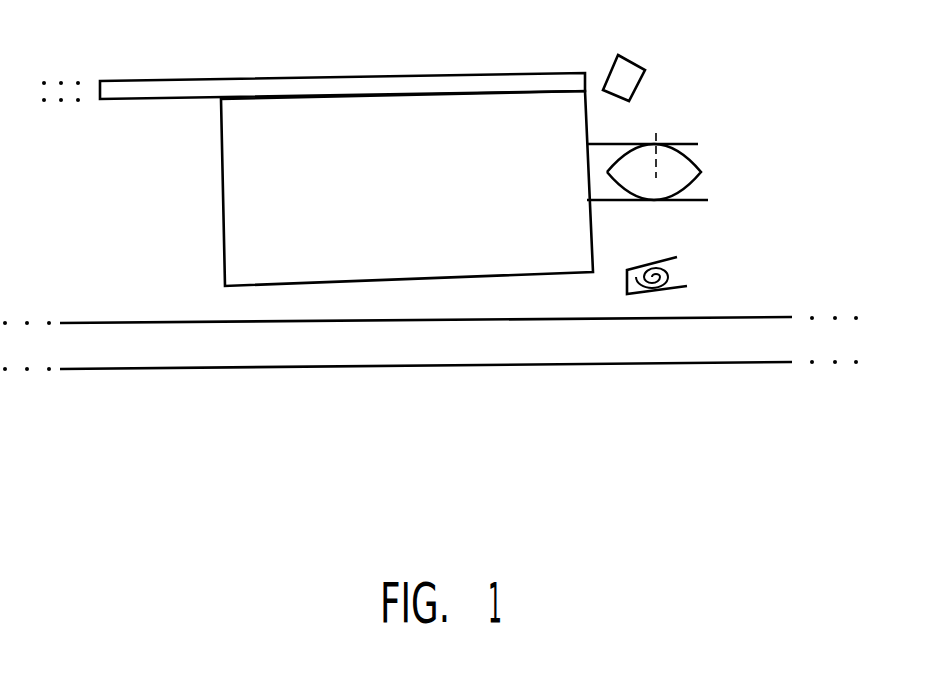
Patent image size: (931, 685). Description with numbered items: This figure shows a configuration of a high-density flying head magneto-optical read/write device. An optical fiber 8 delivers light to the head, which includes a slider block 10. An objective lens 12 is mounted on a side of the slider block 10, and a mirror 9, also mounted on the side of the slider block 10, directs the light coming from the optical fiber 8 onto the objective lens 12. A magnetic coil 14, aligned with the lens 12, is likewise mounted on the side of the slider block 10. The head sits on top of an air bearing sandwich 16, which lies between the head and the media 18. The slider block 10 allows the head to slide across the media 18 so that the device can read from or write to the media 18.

The optical fiber 8 is at (163, 81).
The mirror 9 is at (645, 80).
The slider block 10 is at (223, 195).
The objective lens 12 is at (700, 160).
The magnetic coil 14 is at (677, 272).
The air bearing sandwich 16 is at (227, 305).
The media 18 is at (773, 364).